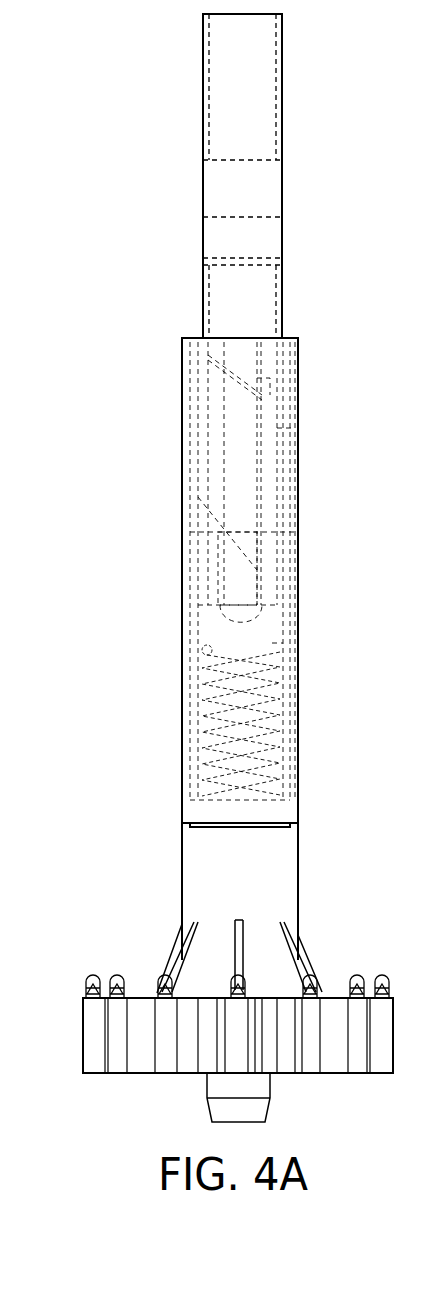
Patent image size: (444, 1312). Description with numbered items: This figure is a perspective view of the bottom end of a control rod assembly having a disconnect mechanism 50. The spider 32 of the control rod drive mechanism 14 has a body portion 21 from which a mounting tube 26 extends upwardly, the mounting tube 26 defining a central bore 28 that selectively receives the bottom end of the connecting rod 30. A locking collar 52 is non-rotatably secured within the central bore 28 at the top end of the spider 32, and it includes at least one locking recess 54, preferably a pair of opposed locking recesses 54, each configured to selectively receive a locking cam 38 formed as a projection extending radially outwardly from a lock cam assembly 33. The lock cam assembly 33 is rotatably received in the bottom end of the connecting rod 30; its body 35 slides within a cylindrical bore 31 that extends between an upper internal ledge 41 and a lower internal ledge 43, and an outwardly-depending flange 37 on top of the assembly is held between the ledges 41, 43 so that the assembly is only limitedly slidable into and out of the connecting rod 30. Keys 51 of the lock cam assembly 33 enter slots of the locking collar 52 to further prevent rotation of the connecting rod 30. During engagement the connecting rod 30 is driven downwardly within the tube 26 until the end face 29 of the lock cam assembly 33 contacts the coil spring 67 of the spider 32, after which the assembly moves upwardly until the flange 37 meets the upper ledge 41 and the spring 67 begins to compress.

The control rod drive mechanism 14 is at (176, 82).
The connecting rod 30 is at (282, 115).
The upper internal ledge 41 is at (282, 165).
The cylindrical bore 31 is at (248, 192).
The lower internal ledge 43 is at (214, 262).
The flange 37 is at (256, 235).
The body 35 is at (240, 300).
The lock cam assembly 33 is at (195, 310).
The disconnect mechanism 50 is at (167, 478).
The key 51 is at (265, 398).
The locking collar 52 is at (288, 430).
The locking recess 54 is at (240, 585).
The locking cam 38 is at (212, 568).
The end face 29 is at (208, 604).
The central bore 28 is at (288, 663).
The coil spring 67 is at (210, 702).
The mounting tube 26 is at (298, 748).
The spider 32 is at (322, 926).
The body portion 21 is at (93, 1028).